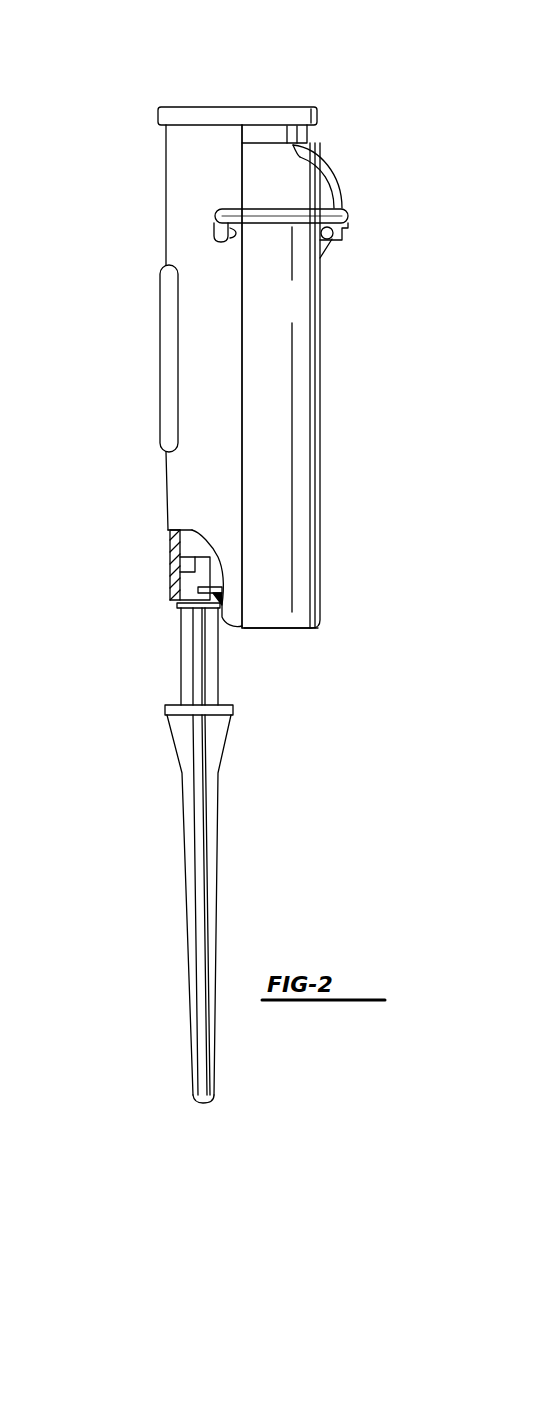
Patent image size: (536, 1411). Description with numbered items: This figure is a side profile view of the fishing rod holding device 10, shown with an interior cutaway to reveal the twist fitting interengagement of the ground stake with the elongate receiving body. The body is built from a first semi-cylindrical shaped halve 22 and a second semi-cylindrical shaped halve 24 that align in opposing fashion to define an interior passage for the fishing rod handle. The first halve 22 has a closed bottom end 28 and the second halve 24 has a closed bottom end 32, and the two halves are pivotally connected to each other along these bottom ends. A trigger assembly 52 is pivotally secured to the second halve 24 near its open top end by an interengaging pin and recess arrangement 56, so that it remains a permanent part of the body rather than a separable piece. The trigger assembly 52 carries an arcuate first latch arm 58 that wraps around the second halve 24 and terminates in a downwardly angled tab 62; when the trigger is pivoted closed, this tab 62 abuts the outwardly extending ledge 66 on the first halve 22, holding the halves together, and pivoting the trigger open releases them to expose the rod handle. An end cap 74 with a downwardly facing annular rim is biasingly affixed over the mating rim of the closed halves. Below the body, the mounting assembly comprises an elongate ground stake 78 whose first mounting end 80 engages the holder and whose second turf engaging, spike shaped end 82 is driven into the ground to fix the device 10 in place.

The holding device 10 is at (138, 397).
The first semi-cylindrical shaped halve 22 is at (160, 178).
The second semi-cylindrical shaped halve 24 is at (322, 375).
The closed bottom end 28 is at (170, 597).
The closed bottom end 32 is at (277, 630).
The trigger assembly 52 is at (338, 178).
The interengaging pin and recess arrangement 56 is at (335, 233).
The first latch arm 58 is at (270, 218).
The downwardly angled tab 62 is at (214, 240).
The first outwardly extending ledge 66 is at (215, 218).
The end cap 74 is at (207, 107).
The elongate ground stake 78 is at (157, 812).
The first mounting end 80 is at (170, 578).
The turf engaging and spike shaped end 82 is at (193, 1103).